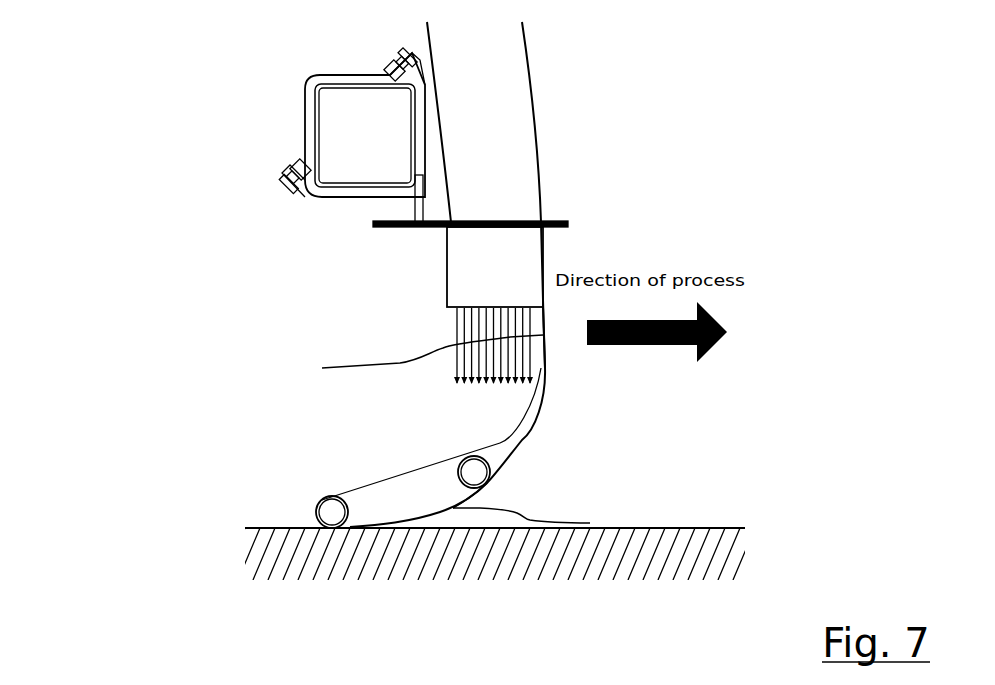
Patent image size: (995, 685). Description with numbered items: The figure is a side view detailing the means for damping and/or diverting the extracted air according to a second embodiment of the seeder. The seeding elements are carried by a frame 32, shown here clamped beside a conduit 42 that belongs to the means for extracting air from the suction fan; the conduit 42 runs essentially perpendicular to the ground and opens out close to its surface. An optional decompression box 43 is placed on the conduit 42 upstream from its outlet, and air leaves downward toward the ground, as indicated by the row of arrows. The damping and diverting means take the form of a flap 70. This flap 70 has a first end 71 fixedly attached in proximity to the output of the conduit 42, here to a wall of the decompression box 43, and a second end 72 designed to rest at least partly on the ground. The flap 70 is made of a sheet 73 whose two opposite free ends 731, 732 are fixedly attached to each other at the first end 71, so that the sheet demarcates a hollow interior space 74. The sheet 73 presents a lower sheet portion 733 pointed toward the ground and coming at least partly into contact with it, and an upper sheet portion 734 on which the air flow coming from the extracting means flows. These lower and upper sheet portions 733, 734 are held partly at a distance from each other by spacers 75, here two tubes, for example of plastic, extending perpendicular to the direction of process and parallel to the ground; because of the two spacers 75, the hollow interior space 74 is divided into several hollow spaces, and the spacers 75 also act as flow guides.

The frame 32 is at (330, 139).
The conduit 42 is at (505, 157).
The decompression box 43 is at (473, 268).
The flap 70 is at (598, 490).
The first end 71 is at (632, 237).
The second end 72 is at (282, 493).
The sheet 73 is at (530, 445).
The hollow interior space 74 is at (510, 457).
The spacer 75 is at (338, 513).
The free end 731 is at (543, 345).
The free end 732 is at (412, 358).
The lower sheet portion 733 is at (544, 519).
The upper sheet portion 734 is at (377, 508).